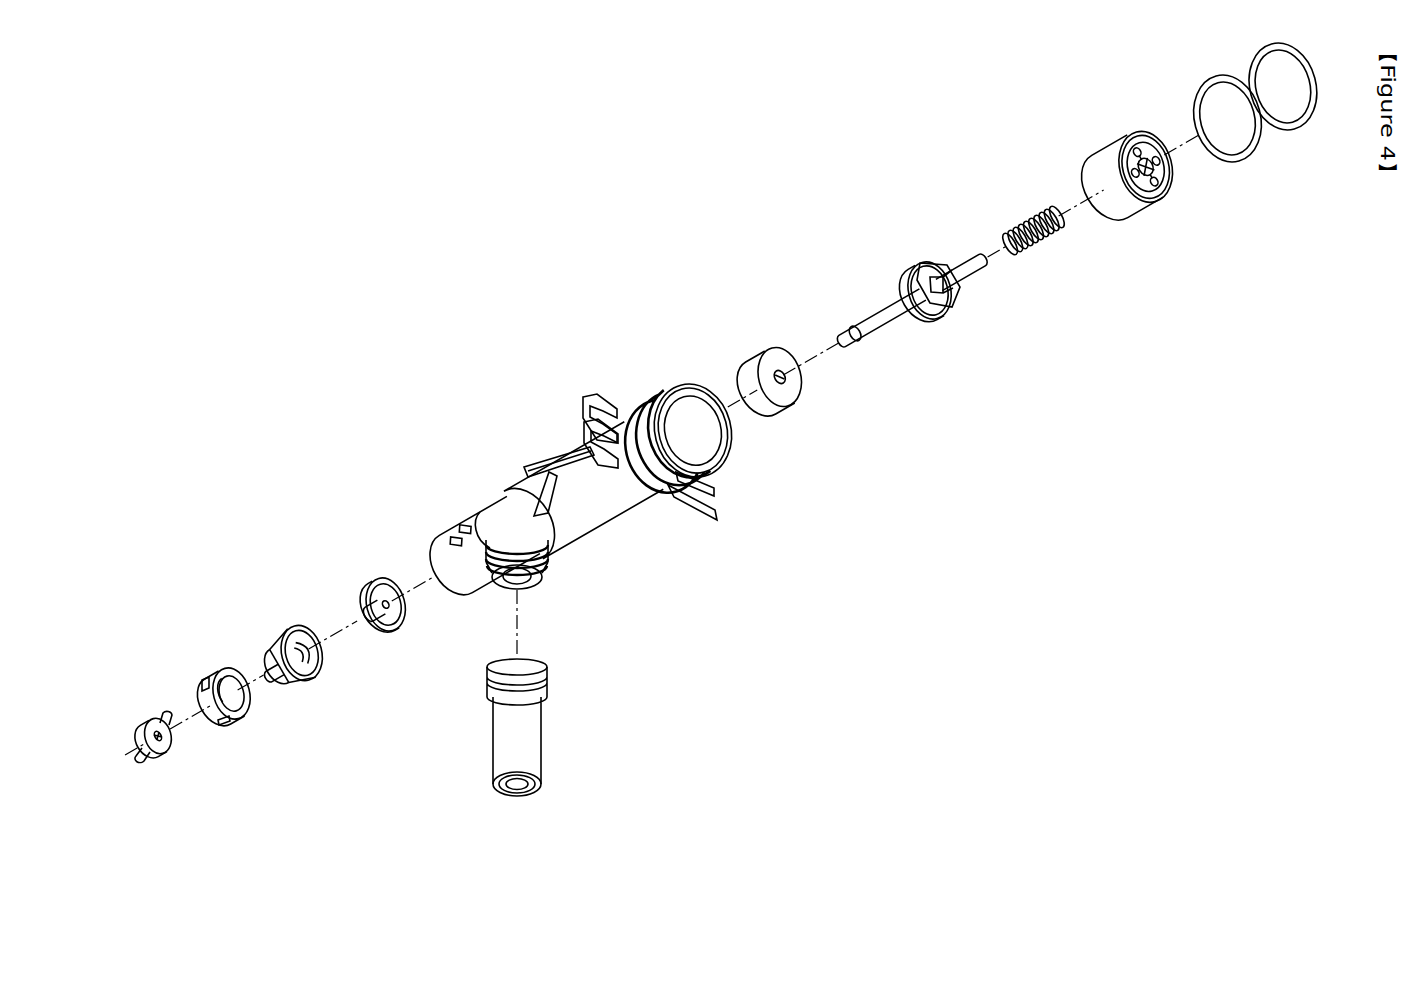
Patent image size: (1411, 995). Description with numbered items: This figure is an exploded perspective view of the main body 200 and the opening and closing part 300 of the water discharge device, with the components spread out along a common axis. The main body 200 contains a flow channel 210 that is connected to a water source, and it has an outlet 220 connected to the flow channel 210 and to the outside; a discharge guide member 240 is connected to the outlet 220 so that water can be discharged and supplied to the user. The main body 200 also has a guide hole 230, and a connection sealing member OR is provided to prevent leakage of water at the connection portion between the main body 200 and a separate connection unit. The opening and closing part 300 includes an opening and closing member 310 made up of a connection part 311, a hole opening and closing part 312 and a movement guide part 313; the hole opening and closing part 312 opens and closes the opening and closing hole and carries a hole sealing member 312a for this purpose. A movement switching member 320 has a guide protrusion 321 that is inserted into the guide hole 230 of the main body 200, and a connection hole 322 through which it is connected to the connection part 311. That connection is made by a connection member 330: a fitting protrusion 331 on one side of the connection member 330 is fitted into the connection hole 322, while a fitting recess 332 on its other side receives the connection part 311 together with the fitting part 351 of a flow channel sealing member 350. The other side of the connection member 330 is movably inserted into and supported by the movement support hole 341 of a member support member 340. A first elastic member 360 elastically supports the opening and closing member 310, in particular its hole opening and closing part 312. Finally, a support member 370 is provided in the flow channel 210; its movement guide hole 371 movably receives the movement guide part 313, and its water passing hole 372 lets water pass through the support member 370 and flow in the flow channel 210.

The main body 200 is at (572, 493).
The flow channel 210 is at (704, 432).
The outlet 220 is at (517, 585).
The guide hole 230 is at (443, 540).
The discharge guide member 240 is at (542, 733).
The opening and closing part 300 is at (257, 537).
The opening and closing member 310 is at (954, 335).
The connection part 311 is at (850, 342).
The hole opening and closing part 312 is at (942, 312).
The hole sealing member 312a is at (768, 404).
The movement guide part 313 is at (975, 275).
The movement switching member 320 is at (215, 759).
The guide protrusion 321 is at (163, 753).
The connection hole 322 is at (173, 733).
The connection member 330 is at (318, 705).
The fitting protrusion 331 is at (268, 680).
The fitting recess 332 is at (320, 677).
The member support member 340 is at (228, 655).
The movement support hole 341 is at (247, 688).
The flow channel sealing member 350 is at (329, 591).
The fitting part 351 is at (377, 572).
The first elastic member 360 is at (1017, 225).
The support member 370 is at (1165, 178).
The movement guide hole 371 is at (1163, 170).
The water passing hole 372 is at (1150, 187).
The connection sealing member OR is at (1277, 120).